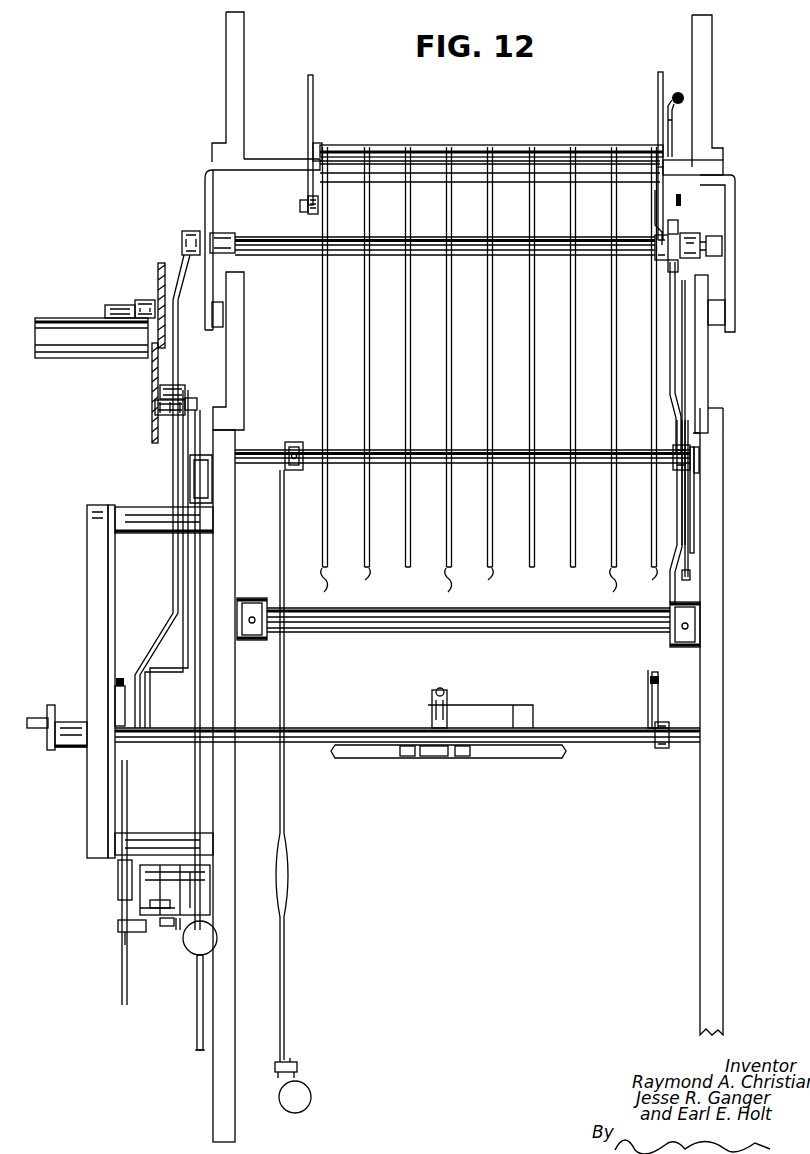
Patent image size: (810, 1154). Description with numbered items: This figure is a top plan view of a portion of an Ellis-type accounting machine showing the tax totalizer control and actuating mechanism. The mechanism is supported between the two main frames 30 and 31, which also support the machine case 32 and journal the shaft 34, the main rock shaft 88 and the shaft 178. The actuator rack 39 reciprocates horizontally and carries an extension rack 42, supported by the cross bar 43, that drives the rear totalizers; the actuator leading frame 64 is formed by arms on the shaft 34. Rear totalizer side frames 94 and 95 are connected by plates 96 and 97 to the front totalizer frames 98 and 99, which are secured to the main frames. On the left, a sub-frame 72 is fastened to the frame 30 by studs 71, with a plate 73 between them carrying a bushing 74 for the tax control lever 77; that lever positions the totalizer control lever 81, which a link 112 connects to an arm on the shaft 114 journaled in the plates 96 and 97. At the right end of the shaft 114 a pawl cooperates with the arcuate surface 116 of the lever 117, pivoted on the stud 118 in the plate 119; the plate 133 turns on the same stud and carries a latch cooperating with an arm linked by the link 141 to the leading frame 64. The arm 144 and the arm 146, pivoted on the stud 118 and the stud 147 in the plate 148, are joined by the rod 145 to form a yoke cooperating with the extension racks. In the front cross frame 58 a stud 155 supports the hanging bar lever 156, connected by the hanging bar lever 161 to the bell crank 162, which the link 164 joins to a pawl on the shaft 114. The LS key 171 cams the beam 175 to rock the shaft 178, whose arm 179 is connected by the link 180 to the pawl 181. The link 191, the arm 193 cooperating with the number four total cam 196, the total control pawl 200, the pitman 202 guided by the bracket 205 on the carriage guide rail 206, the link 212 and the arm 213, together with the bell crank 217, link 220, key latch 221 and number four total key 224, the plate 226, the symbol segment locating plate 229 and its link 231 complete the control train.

The main frame 30 is at (235, 990).
The main frame 31 is at (700, 824).
The machine case 32 is at (161, 263).
The shaft 34 is at (410, 630).
The actuator rack 39 is at (489, 582).
The extension rack 42 is at (361, 144).
The cross bar 43 is at (285, 152).
The front cross frame 58 is at (520, 752).
The actuator leading frame 64 is at (251, 599).
The studs 71 is at (148, 510).
The sub-frame 72 is at (90, 572).
The plate 73 is at (110, 601).
The bushing 74 is at (66, 750).
The tax control lever 77 is at (52, 708).
The totalizer control lever 81 is at (120, 678).
The main rock shaft 88 is at (182, 728).
The rear totalizer side frame 94 is at (240, 47).
The rear totalizer side frame 95 is at (692, 43).
The plate 96 is at (213, 190).
The plate 97 is at (735, 201).
The front totalizer frame 98 is at (244, 342).
The front totalizer frame 99 is at (708, 373).
The link 112 is at (172, 556).
The shaft 114 is at (302, 250).
The arcuate surface 116 is at (678, 228).
The lever 117 is at (670, 131).
The stud 118 is at (681, 200).
The plate 119 is at (658, 85).
The plate 133 is at (700, 236).
The link 141 is at (690, 575).
The arm 144 is at (658, 221).
The rod 145 is at (490, 146).
The arm 146 is at (318, 208).
The stud 147 is at (302, 205).
The plate 148 is at (313, 96).
The stud 155 is at (432, 692).
The hanging bar lever 156 is at (462, 706).
The hanging bar lever 161 is at (655, 722).
The bell crank 162 is at (648, 707).
The link 164 is at (670, 598).
The LS key 171 is at (300, 1086).
The beam 175 is at (285, 797).
The shaft 178 is at (486, 456).
The arm 179 is at (694, 538).
The link 180 is at (680, 436).
The pawl 181 is at (680, 270).
The link 191 is at (148, 684).
The arm 193 is at (140, 932).
The No. 4 total cam 196 is at (122, 880).
The total control pawl 200 is at (160, 392).
The pitman 202 is at (147, 298).
The bracket 205 is at (110, 300).
The traveling carriage guide rail 206 is at (78, 327).
The link 212 is at (197, 404).
The arm 213 is at (208, 495).
The bell crank 217 is at (170, 902).
The link 220 is at (158, 918).
The key latch 221 is at (178, 950).
The No. 4 total key 224 is at (217, 940).
The plate 226 is at (155, 407).
The symbol segment locating plate 229 is at (197, 1031).
The link 231 is at (200, 663).